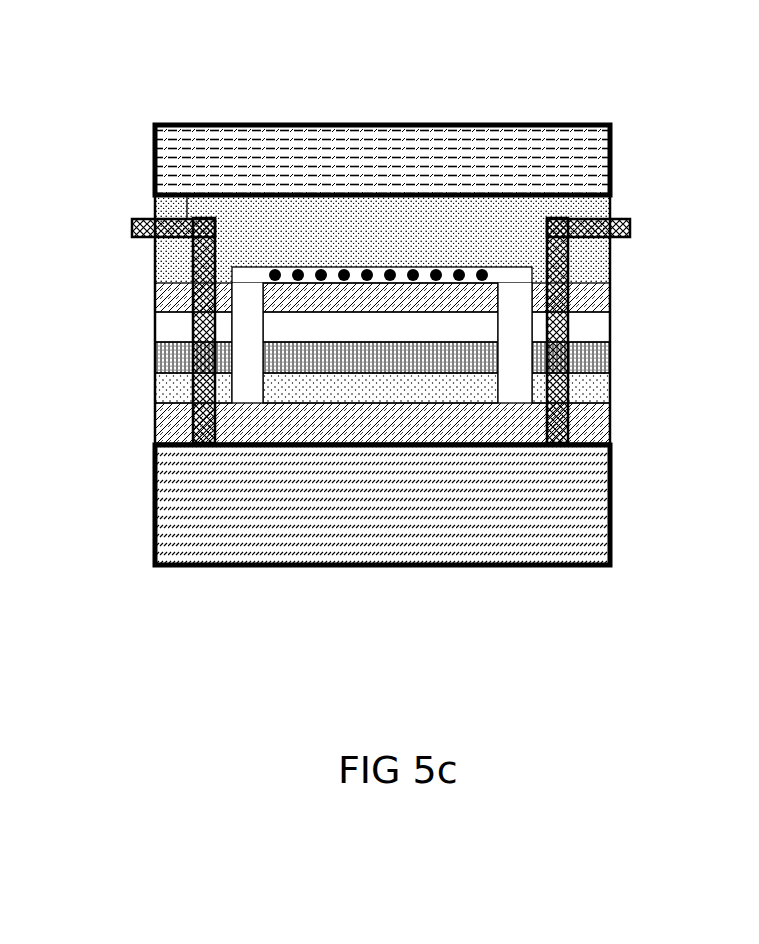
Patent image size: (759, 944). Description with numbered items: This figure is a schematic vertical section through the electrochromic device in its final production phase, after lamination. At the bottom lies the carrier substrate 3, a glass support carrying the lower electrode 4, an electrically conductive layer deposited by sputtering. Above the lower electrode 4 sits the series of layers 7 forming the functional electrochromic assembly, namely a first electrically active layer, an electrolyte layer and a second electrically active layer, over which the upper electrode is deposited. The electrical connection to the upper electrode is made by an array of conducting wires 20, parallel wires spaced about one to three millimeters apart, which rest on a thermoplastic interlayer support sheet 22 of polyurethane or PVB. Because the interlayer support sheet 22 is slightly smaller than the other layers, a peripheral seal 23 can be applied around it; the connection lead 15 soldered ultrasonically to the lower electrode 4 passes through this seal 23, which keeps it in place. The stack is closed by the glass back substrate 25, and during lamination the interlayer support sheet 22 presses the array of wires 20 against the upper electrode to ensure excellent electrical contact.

The carrier substrate 3 is at (445, 540).
The lower electrode 4 is at (155, 430).
The series of layers 7 is at (622, 313).
The connection lead 15 is at (132, 223).
The array of conducting wires 20 is at (425, 257).
The interlayer support sheet 22 is at (317, 220).
The seal 23 is at (610, 212).
The glass back substrate 25 is at (537, 142).